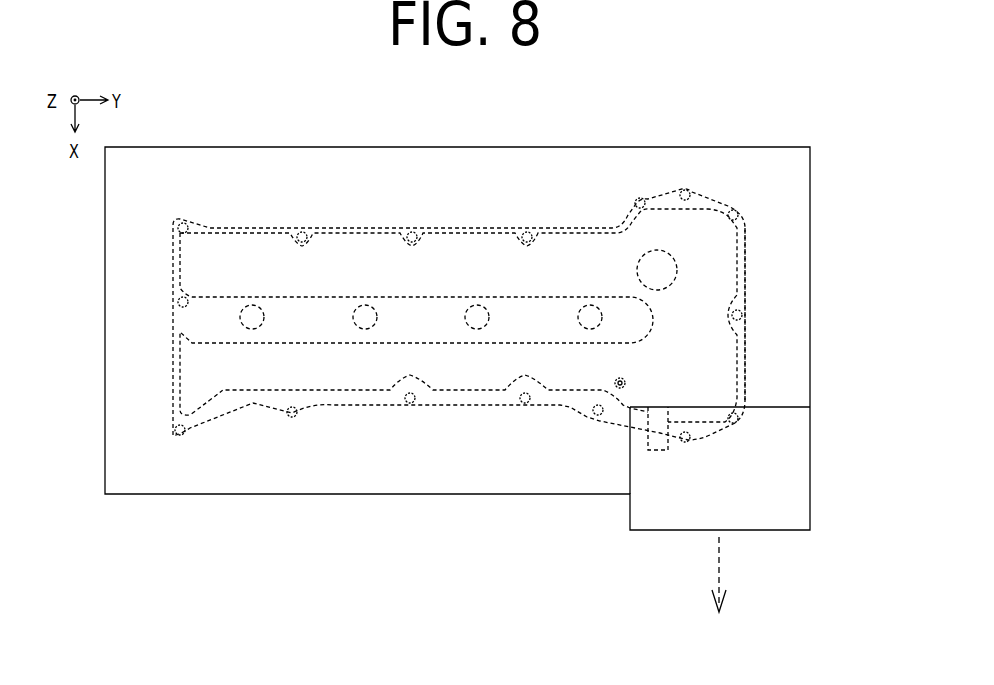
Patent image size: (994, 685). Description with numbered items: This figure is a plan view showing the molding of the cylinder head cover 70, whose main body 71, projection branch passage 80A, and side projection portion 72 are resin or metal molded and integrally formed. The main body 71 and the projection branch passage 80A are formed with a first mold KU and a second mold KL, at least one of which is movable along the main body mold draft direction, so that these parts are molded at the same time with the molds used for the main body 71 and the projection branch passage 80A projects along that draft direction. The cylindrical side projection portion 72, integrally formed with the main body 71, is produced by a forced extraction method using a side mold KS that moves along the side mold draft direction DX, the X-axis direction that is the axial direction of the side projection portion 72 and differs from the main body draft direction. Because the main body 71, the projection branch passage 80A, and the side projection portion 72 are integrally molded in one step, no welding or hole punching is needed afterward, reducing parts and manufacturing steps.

The first mold KU is at (725, 172).
The second mold KL is at (822, 194).
The side mold KS is at (822, 497).
The cylinder head cover 70 is at (773, 339).
The main body 71 is at (687, 338).
The side projection portion 72 is at (672, 442).
The projection branch passage 80A is at (618, 389).
The side mold draft direction DX is at (718, 591).